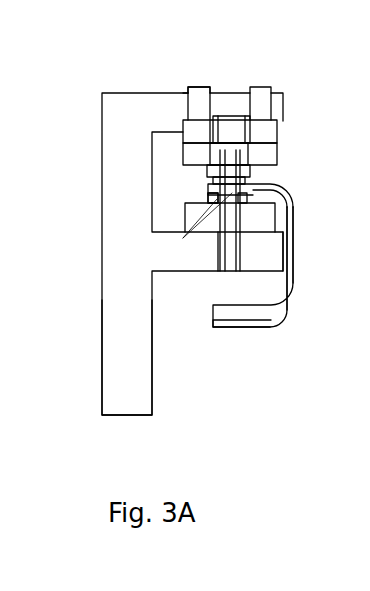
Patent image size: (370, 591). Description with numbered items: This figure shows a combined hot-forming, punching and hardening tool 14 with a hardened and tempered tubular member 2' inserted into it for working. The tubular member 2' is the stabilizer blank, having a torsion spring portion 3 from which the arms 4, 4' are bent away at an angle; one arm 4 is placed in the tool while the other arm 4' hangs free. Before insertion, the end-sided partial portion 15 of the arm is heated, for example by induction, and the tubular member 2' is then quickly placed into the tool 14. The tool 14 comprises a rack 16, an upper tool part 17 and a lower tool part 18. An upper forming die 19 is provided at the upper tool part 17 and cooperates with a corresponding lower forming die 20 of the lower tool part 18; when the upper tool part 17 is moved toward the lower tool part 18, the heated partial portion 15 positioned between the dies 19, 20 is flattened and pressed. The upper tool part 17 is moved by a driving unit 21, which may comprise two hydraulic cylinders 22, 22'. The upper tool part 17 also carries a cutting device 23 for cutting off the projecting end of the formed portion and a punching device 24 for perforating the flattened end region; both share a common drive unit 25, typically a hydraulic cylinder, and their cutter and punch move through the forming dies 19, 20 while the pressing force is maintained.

The combined hot-forming, punching and hardening tool 14 is at (205, 57).
The end-sided partial portion 15 is at (250, 181).
The rack 16 is at (152, 366).
The upper tool part 17 is at (178, 150).
The lower tool part 18 is at (178, 218).
The upper forming die 19 is at (207, 175).
The lower forming die 20 is at (208, 196).
The driving unit 21 is at (181, 81).
The hydraulic cylinder 22 is at (216, 96).
The hydraulic cylinder 22' is at (272, 83).
The cutting device 23 is at (240, 147).
The punching device 24 is at (247, 168).
The common drive unit 25 is at (237, 128).
The arm 4 is at (267, 202).
The arm 4' is at (249, 345).
The torsion spring portion 3 is at (294, 276).
The tubular member 2' is at (308, 258).